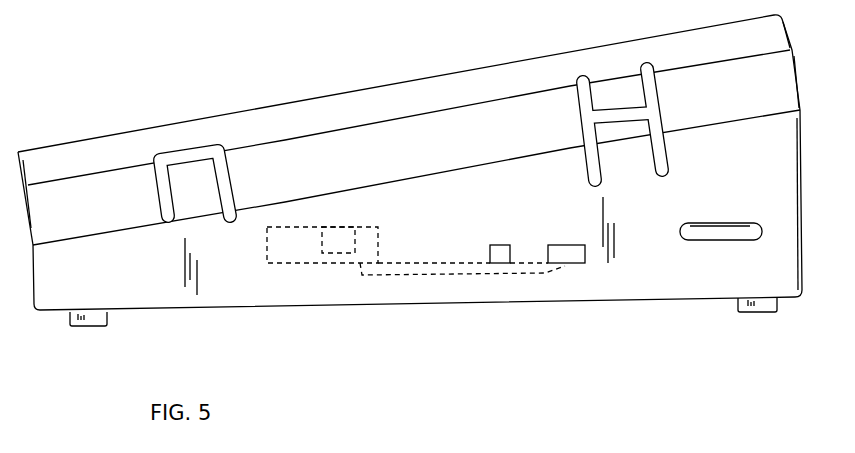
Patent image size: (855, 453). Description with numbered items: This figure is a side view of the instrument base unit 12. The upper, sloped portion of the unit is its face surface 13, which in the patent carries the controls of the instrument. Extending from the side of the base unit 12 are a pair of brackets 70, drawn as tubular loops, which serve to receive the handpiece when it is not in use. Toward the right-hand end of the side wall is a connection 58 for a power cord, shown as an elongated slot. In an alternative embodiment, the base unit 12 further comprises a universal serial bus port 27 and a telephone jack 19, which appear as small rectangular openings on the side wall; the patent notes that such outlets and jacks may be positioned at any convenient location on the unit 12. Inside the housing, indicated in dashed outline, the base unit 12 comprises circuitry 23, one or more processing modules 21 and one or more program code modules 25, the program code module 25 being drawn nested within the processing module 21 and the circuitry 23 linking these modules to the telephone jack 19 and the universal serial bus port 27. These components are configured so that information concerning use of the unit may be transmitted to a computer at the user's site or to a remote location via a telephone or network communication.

The base unit 12 is at (436, 252).
The face surface 13 is at (420, 78).
The telephone jack 19 is at (500, 244).
The processing module 21 is at (305, 265).
The circuitry 23 is at (433, 280).
The program code module 25 is at (340, 245).
The universal serial bus port 27 is at (568, 245).
The connection for a power cord 58 is at (720, 224).
The brackets 70 is at (237, 184).